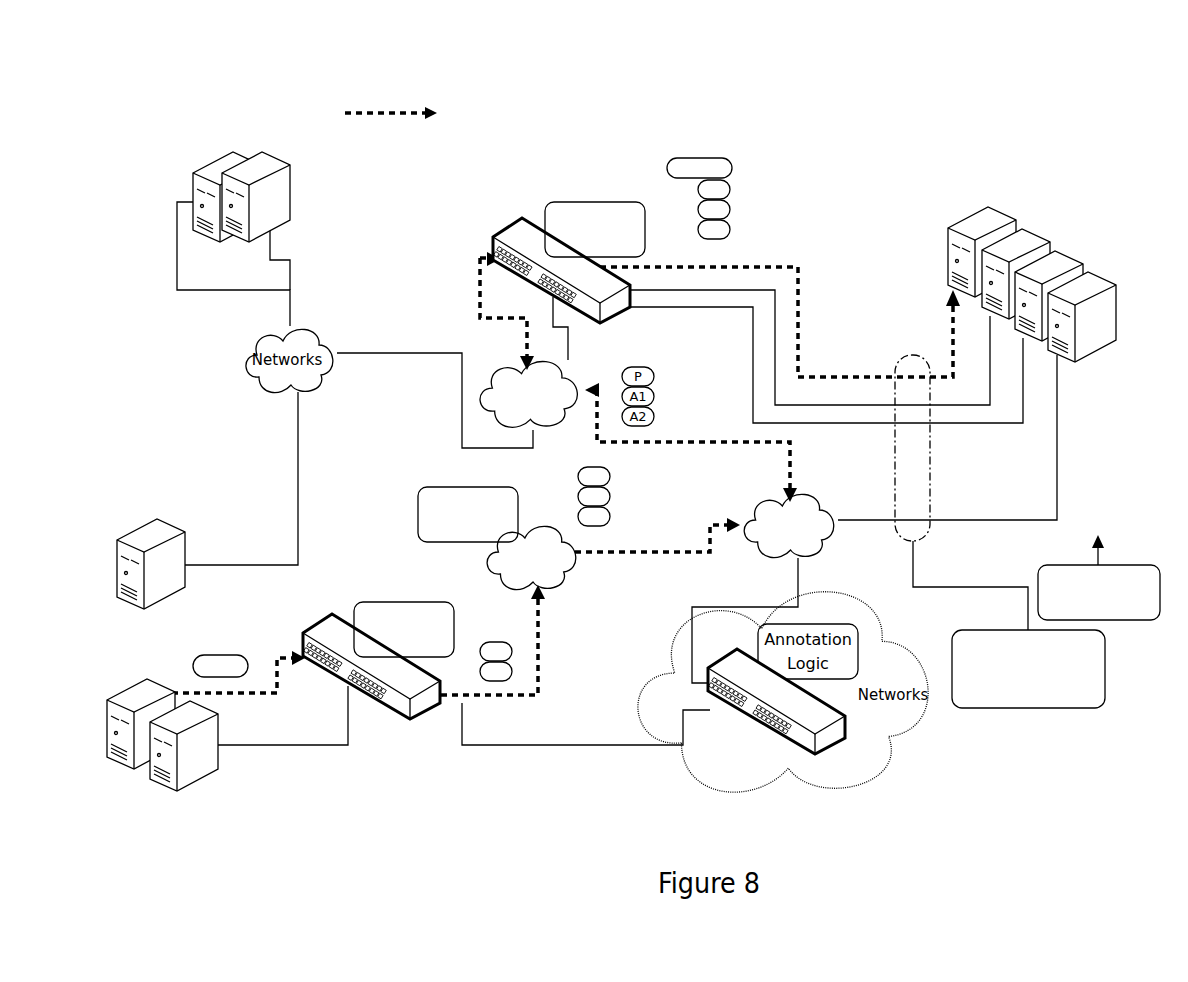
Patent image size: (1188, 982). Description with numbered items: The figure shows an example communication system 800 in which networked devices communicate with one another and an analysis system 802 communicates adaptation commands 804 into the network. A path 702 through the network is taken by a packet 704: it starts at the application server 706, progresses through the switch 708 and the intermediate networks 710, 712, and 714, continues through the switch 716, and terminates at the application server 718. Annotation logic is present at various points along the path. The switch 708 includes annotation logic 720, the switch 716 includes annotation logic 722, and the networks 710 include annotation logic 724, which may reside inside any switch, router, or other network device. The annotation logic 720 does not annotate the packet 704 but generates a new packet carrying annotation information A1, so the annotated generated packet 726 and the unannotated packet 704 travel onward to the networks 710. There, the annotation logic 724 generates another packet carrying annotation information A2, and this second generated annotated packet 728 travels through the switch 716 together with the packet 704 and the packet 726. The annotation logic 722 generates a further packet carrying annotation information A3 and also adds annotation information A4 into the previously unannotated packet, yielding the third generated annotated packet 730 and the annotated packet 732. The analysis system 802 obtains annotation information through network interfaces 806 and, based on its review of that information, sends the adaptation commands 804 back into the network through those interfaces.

The communication system 800 is at (118, 61).
The path 702 is at (354, 118).
The packet 704 is at (240, 656).
The application server 706 is at (113, 765).
The switch 708 is at (403, 722).
The networks 710 is at (512, 578).
The networks 712 is at (833, 535).
The networks 714 is at (545, 422).
The switch 716 is at (510, 233).
The application server 718 is at (980, 222).
The annotation logic 720 is at (372, 602).
The annotation logic 722 is at (570, 200).
The annotation logic 724 is at (425, 493).
The annotated generated packet 726 is at (512, 682).
The second generated annotated packet 728 is at (608, 528).
The third generated annotated packet 730 is at (730, 235).
The annotated packet 732 is at (730, 165).
The analysis system 802 is at (987, 707).
The adaptation commands 804 is at (1130, 565).
The network interfaces 806 is at (930, 505).